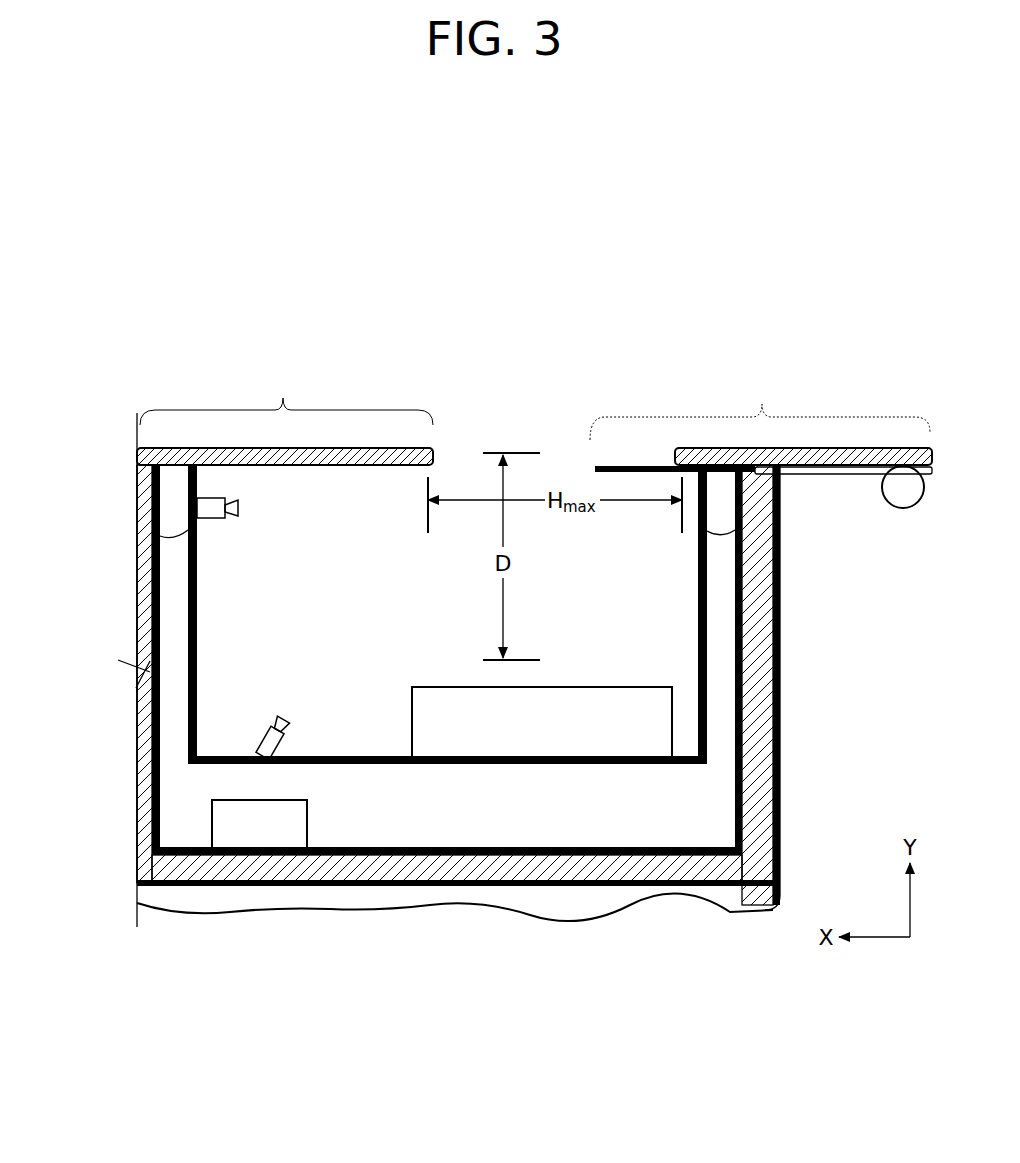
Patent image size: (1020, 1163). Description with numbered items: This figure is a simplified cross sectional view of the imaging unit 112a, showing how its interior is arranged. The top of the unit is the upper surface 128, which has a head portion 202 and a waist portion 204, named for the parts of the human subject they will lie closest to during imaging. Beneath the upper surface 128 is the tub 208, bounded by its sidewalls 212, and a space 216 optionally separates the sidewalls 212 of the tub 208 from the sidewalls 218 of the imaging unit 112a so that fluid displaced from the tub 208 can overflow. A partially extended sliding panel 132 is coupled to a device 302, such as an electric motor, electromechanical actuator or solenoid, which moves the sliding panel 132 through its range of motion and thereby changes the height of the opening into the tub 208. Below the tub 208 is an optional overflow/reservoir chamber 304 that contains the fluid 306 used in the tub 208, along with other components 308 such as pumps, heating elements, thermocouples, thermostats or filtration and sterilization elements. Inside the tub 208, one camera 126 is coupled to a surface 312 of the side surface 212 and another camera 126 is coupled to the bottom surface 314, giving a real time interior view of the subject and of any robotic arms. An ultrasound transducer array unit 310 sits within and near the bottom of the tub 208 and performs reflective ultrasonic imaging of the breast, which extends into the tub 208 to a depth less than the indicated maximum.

The imaging unit 112a is at (318, 355).
The waist portion 204 is at (287, 390).
The tub 208 is at (277, 538).
The upper surface 128 is at (378, 447).
The space 216 is at (177, 487).
The sliding panel 132 is at (637, 463).
The head portion 202 is at (762, 403).
The camera 126 is at (205, 507).
The fluid 306 is at (172, 600).
The surface of the side surface 312 is at (198, 623).
The bottom surface 314 is at (350, 757).
The sidewalls of the imaging unit 218 is at (150, 757).
The device 302 is at (906, 491).
The sidewalls of the tub 212 is at (707, 737).
The overflow/reservoir chamber 304 is at (683, 830).
The ultrasound transducer array unit 310 is at (542, 724).
The other components 308 is at (259, 824).